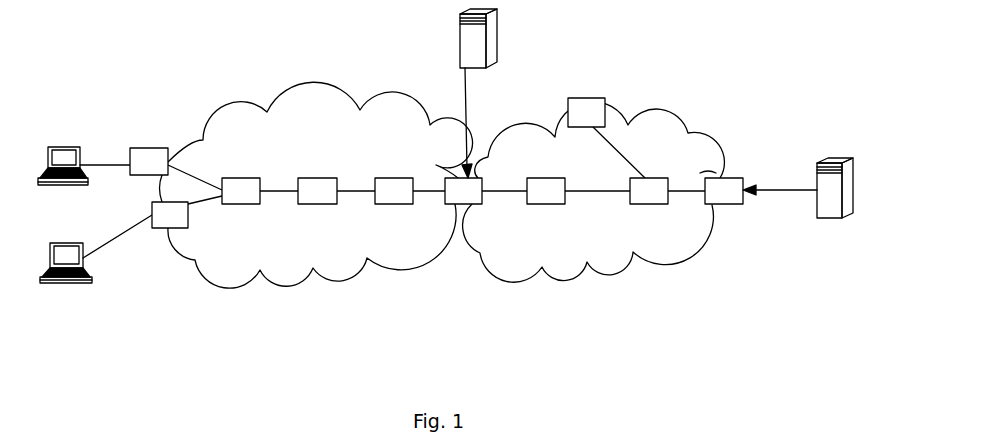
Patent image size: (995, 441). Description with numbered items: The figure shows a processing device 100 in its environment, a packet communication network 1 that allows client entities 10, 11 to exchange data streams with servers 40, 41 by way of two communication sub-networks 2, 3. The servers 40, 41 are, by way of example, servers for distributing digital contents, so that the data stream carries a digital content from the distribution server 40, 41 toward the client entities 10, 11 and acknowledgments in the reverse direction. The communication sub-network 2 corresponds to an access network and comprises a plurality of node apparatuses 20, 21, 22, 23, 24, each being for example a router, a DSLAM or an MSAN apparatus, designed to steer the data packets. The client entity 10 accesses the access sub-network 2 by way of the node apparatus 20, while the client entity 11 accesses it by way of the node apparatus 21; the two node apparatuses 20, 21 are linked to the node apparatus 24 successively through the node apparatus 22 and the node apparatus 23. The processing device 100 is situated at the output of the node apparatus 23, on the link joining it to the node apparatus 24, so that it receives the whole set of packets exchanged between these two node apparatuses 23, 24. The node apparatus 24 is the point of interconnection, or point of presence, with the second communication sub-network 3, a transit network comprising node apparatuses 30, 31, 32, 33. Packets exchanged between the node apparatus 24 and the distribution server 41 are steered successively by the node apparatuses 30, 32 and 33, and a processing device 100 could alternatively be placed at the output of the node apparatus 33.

The packet communication network 1 is at (350, 330).
The communication sub-network 2 is at (332, 285).
The second communication sub-network 3 is at (607, 277).
The client entity 10 is at (65, 185).
The client entity 11 is at (66, 283).
The node apparatus 20 is at (137, 176).
The node apparatus 21 is at (158, 229).
The node apparatus 22 is at (230, 205).
The node apparatus 23 is at (307, 205).
The node apparatus 24 is at (455, 205).
The node apparatus 30 is at (535, 205).
The node apparatus 31 is at (575, 128).
The node apparatus 32 is at (638, 205).
The node apparatus 33 is at (713, 205).
The distribution server 40 is at (472, 68).
The distribution server 41 is at (833, 218).
The processing device 100 is at (385, 205).